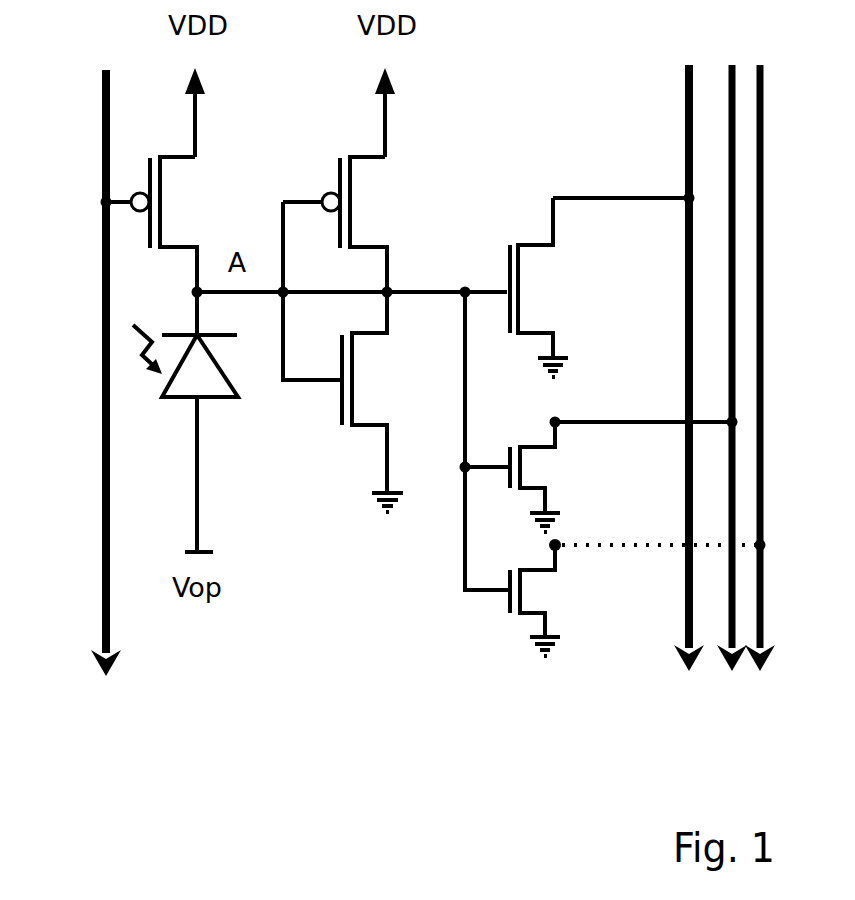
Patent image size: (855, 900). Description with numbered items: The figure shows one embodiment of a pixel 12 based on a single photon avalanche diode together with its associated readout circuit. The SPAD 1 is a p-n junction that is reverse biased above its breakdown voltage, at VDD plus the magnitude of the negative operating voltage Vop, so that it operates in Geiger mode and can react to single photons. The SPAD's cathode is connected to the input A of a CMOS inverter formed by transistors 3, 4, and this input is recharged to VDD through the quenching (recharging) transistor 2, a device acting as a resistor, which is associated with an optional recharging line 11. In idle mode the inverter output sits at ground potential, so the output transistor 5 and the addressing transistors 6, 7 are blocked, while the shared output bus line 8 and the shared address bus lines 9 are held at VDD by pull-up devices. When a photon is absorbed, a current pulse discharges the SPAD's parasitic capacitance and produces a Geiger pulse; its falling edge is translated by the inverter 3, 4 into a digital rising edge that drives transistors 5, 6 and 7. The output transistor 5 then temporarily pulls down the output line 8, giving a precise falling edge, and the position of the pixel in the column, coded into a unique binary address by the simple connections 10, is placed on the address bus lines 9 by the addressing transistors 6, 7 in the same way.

The SPAD 1 is at (217, 400).
The quenching transistor 2 is at (167, 152).
The CMOS inverter transistor 3 is at (337, 175).
The CMOS inverter transistor 4 is at (338, 352).
The output transistor 5 is at (505, 268).
The addressing transistor 6 is at (505, 458).
The addressing transistor 7 is at (505, 582).
The shared output bus line 8 is at (685, 112).
The shared address bus lines 9 is at (733, 172).
The connections 10 is at (574, 425).
The recharging line 11 is at (107, 603).
The pixel 12 is at (173, 769).